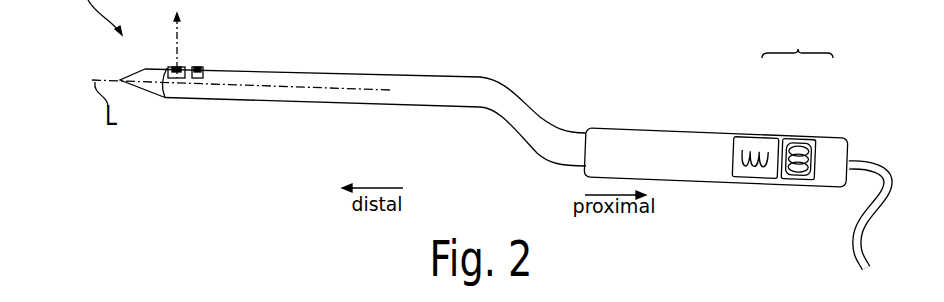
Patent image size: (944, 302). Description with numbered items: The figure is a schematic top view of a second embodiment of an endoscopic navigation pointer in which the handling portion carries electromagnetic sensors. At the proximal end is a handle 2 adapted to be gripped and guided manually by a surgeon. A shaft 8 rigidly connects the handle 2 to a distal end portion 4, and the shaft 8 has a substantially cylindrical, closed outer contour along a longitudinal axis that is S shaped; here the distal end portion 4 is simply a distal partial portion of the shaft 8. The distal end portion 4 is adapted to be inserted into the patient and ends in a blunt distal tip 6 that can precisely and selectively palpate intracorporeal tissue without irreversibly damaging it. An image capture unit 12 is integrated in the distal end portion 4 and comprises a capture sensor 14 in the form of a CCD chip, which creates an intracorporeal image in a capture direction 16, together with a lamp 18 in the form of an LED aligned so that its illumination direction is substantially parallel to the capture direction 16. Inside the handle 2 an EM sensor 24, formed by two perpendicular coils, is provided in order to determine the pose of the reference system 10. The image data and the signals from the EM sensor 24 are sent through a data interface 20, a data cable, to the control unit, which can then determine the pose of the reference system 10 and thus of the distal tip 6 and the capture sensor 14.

The handle 2 is at (638, 145).
The distal end portion 4 is at (196, 55).
The distal tip 6 is at (141, 93).
The shaft 8 is at (505, 97).
The reference system 10 is at (797, 40).
The image capture unit 12 is at (188, 83).
The capture sensor 14 is at (173, 67).
The capture direction 16 is at (176, 16).
The lamp 18 is at (200, 67).
The data interface 20 is at (855, 233).
The EM sensor 24 is at (758, 138).